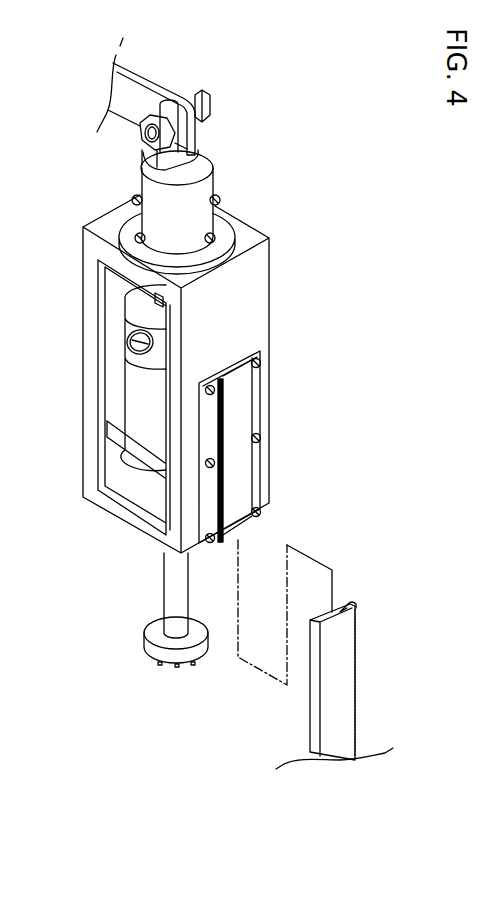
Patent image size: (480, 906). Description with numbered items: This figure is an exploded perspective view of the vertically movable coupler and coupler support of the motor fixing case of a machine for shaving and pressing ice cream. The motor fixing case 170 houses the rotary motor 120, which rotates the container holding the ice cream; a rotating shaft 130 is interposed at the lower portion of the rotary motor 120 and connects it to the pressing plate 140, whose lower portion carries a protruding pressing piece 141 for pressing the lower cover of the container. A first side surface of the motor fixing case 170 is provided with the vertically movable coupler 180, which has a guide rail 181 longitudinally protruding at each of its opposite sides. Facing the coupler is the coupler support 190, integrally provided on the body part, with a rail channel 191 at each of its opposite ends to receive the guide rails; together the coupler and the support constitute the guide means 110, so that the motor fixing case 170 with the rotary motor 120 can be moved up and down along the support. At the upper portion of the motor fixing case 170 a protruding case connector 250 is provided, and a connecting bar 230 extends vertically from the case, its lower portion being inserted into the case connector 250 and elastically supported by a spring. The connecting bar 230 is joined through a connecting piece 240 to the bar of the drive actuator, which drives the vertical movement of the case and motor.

The guide means 110 is at (257, 391).
The rotary motor 120 is at (137, 392).
The rotating shaft 130 is at (171, 577).
The pressing plate 140 is at (147, 648).
The protruding pressing piece 141 is at (177, 670).
The motor fixing case 170 is at (252, 270).
The vertically movable coupler 180 is at (238, 472).
The guide rail 181 is at (259, 356).
The coupler support 190 is at (354, 640).
The rail channel 191 is at (340, 604).
The connecting bar 230 is at (205, 150).
The connecting piece 240 is at (132, 110).
The case connector 250 is at (200, 193).